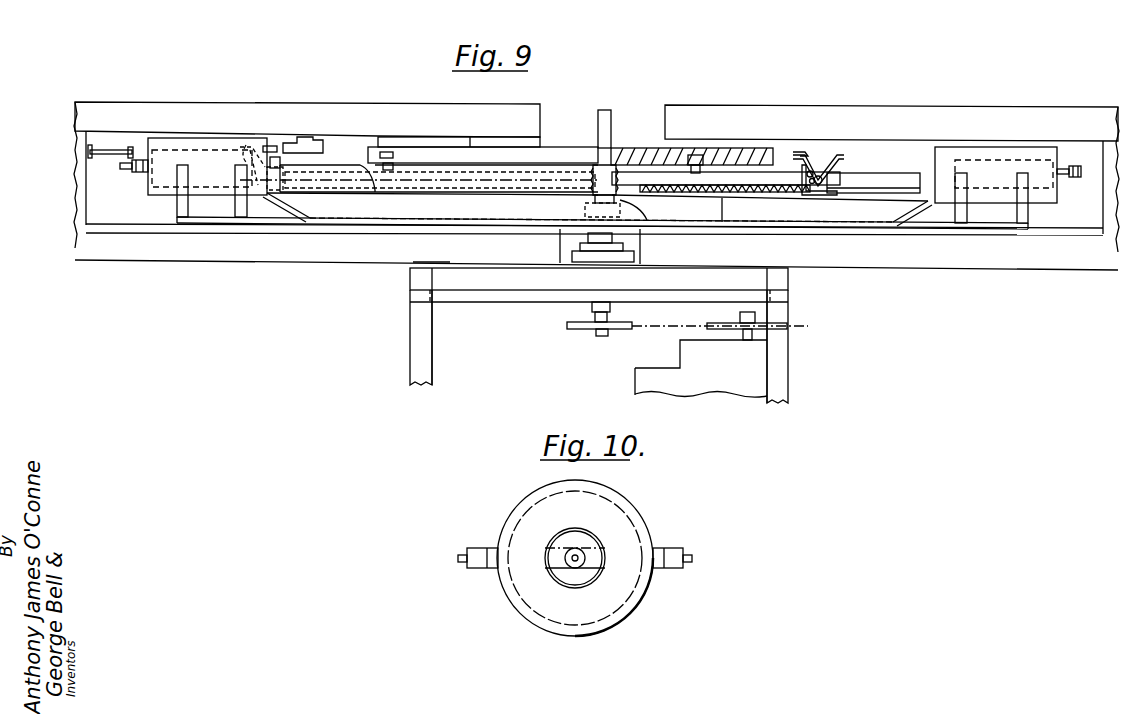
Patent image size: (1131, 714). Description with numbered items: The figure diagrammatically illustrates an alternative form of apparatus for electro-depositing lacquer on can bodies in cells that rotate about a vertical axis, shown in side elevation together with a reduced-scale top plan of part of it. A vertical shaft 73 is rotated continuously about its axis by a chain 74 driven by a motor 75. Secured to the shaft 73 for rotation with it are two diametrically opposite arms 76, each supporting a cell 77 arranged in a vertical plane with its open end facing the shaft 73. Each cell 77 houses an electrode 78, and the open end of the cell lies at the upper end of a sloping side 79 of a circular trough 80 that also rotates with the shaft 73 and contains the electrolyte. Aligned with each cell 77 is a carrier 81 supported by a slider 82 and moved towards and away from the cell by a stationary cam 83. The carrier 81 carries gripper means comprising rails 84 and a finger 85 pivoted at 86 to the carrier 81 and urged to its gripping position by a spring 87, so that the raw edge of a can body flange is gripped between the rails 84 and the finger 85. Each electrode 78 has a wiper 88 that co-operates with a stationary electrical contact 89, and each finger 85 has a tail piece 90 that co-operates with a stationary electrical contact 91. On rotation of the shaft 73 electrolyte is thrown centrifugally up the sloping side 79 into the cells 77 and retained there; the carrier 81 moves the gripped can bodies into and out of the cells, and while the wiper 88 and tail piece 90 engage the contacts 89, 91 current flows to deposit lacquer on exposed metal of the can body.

In FIG. 9, the vertical shaft 73 is at (605, 170).
In FIG. 10, the vertical shaft 73 is at (577, 565).
In FIG. 9, the chain 74 is at (642, 330).
In FIG. 9, the motor 75 is at (645, 386).
In FIG. 9, the arms 76 is at (290, 224).
In FIG. 10, the arms 76 is at (483, 548).
In FIG. 9, the cell 77 is at (208, 138).
In FIG. 10, the cell 77 is at (487, 566).
In FIG. 9, the electrode 78 is at (187, 158).
In FIG. 9, the sloping side 79 is at (912, 213).
In FIG. 10, the sloping side 79 is at (627, 503).
In FIG. 9, the circular trough 80 is at (878, 222).
In FIG. 10, the circular trough 80 is at (542, 518).
In FIG. 9, the carrier 81 is at (300, 150).
In FIG. 9, the slider 82 is at (662, 177).
In FIG. 9, the stationary cam 83 is at (625, 147).
In FIG. 9, the rails 84 is at (902, 188).
In FIG. 9, the finger 85 is at (833, 155).
In FIG. 9, the pivot 86 is at (820, 184).
In FIG. 9, the spring 87 is at (805, 192).
In FIG. 9, the wiper 88 is at (128, 170).
In FIG. 9, the stationary electrical contact 89 is at (120, 168).
In FIG. 9, the tail piece 90 is at (273, 144).
In FIG. 9, the stationary electrical contact 91 is at (290, 147).